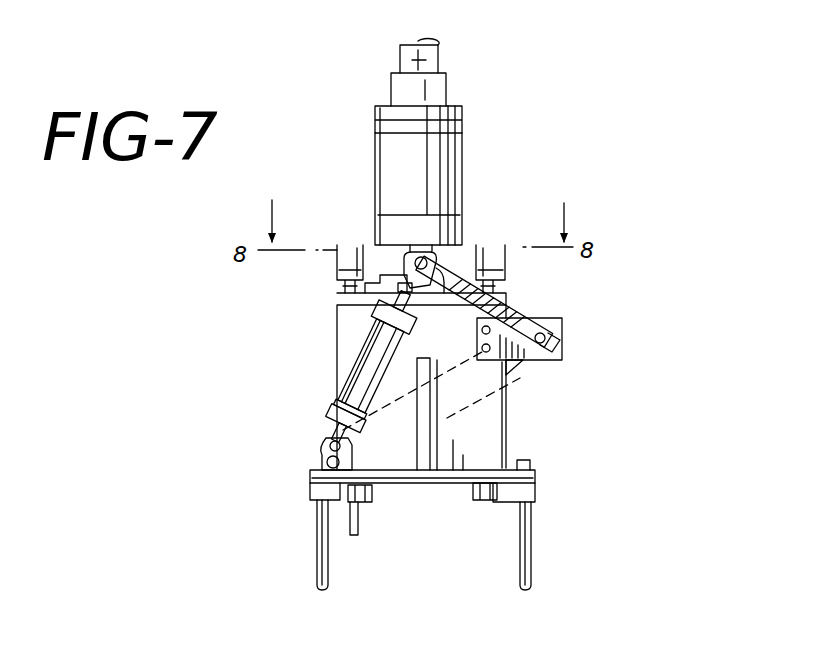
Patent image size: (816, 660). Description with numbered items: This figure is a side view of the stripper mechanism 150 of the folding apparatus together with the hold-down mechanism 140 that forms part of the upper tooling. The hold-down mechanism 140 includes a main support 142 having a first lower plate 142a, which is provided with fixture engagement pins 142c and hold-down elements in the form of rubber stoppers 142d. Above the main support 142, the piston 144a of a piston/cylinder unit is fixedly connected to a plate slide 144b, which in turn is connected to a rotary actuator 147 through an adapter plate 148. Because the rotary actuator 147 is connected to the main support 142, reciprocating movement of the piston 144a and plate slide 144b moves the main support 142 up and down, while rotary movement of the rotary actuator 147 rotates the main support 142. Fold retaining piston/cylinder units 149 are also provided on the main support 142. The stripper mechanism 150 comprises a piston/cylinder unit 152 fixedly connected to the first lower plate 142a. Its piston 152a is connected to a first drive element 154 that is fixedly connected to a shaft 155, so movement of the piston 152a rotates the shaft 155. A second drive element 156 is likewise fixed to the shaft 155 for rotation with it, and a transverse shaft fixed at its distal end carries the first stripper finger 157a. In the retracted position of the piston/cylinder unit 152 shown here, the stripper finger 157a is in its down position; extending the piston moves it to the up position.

The piston 144a is at (437, 52).
The plate slide 144b is at (442, 90).
The adapter plate 148 is at (455, 107).
The rotary actuator 147 is at (450, 227).
The fold retaining piston/cylinder units 149 is at (358, 250).
The first drive element 154 is at (503, 298).
The shaft 155 is at (565, 318).
The stripper mechanism 150 is at (578, 343).
The piston/cylinder unit 152 is at (340, 397).
The piston 152a is at (340, 284).
The second drive element 156 is at (313, 468).
The main support 142 is at (503, 433).
The hold-down mechanism 140 is at (529, 448).
The first lower plate 142a is at (533, 467).
The rubber stoppers 142d is at (372, 490).
The fixture engagement pins 142c is at (327, 588).
The first stripper finger 157a is at (343, 528).